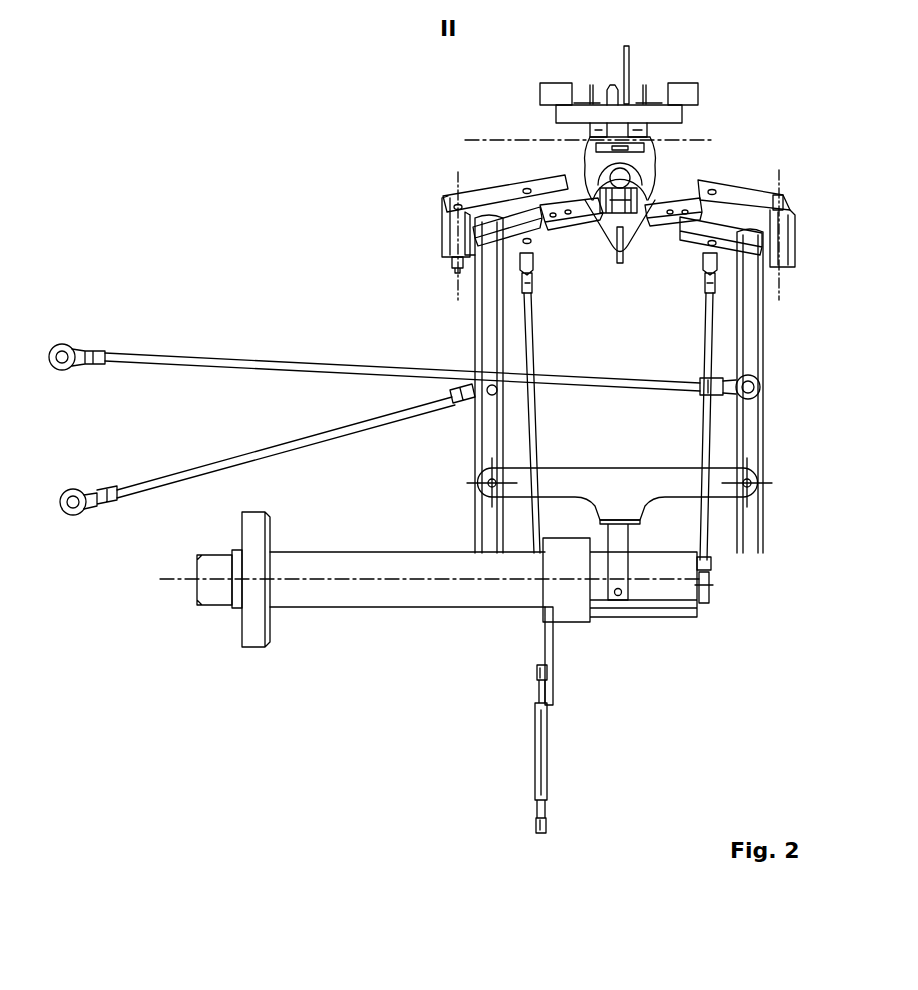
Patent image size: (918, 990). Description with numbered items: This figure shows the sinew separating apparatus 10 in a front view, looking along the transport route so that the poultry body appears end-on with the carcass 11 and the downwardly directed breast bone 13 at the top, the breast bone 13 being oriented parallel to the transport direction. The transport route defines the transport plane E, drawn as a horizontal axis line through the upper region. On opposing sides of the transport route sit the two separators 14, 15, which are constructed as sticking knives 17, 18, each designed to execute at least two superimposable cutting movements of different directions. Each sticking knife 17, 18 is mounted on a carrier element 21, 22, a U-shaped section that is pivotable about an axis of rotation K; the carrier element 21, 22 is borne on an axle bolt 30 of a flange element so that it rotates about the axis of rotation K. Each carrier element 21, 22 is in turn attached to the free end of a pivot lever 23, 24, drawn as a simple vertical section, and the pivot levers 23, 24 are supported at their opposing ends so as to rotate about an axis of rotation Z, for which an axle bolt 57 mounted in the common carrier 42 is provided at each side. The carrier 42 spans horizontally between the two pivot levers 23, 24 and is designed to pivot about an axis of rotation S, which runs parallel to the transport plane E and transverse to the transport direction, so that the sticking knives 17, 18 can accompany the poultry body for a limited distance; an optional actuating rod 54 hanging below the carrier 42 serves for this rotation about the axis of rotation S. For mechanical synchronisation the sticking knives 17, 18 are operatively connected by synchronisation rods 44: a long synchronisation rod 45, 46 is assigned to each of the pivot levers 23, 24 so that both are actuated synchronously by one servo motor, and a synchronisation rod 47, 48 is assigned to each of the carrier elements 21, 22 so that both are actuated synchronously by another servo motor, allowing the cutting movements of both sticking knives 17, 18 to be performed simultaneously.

The sinew separating apparatus 10 is at (300, 162).
The carcass 11 is at (642, 228).
The breast bone 13 is at (620, 260).
The separator 14 is at (572, 255).
The separator 15 is at (650, 263).
The sticking knife 17 is at (668, 198).
The sticking knife 18 is at (577, 192).
The carrier element 21 is at (438, 193).
The carrier element 22 is at (750, 187).
The pivot lever 23 is at (478, 334).
The pivot lever 24 is at (760, 403).
The axle bolt 30 is at (780, 194).
The carrier 42 is at (720, 490).
The synchronisation rods 44 is at (293, 337).
The synchronisation rod 45 is at (182, 353).
The synchronisation rod 46 is at (170, 478).
The synchronisation rod 47 is at (535, 428).
The synchronisation rod 48 is at (705, 345).
The actuating rod 54 is at (546, 757).
The axle bolt 57 is at (487, 487).
The transport plane E is at (477, 140).
The axis of rotation K is at (458, 290).
The axis of rotation S is at (458, 585).
The axis of rotation Z is at (478, 475).